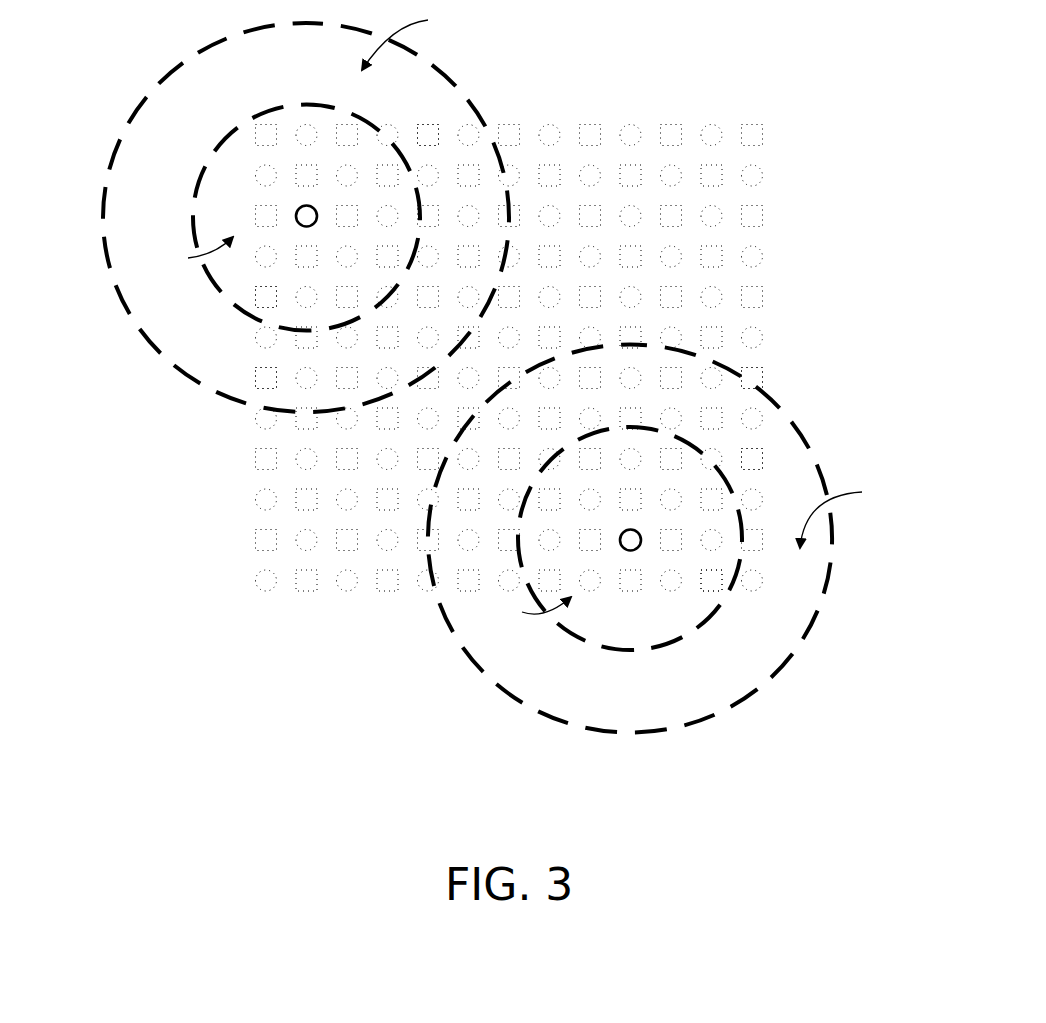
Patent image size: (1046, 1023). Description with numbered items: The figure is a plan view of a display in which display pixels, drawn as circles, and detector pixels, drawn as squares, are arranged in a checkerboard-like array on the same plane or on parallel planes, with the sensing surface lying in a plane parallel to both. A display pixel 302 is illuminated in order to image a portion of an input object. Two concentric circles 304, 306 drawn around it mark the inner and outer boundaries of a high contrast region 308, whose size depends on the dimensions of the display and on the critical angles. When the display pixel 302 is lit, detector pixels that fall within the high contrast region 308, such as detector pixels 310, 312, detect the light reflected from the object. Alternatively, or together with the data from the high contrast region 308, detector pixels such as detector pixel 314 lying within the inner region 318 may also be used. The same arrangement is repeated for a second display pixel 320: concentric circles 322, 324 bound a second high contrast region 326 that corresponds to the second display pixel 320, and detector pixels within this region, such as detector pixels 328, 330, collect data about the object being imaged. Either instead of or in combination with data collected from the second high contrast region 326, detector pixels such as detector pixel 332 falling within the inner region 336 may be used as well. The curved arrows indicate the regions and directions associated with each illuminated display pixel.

The display pixel 302 is at (297, 212).
The concentric circle 304 is at (280, 104).
The concentric circle 306 is at (140, 107).
The high contrast region 308 is at (418, 38).
The detector pixel 310 is at (436, 127).
The detector pixel 312 is at (258, 374).
The detector pixel 314 is at (252, 301).
The region 318 is at (188, 255).
The second display pixel 320 is at (638, 549).
The concentric circle 322 is at (628, 653).
The concentric circle 324 is at (488, 678).
The second high contrast region 326 is at (857, 516).
The detector pixel 328 is at (762, 460).
The detector pixel 330 is at (763, 379).
The detector pixel 332 is at (717, 588).
The region 336 is at (524, 611).